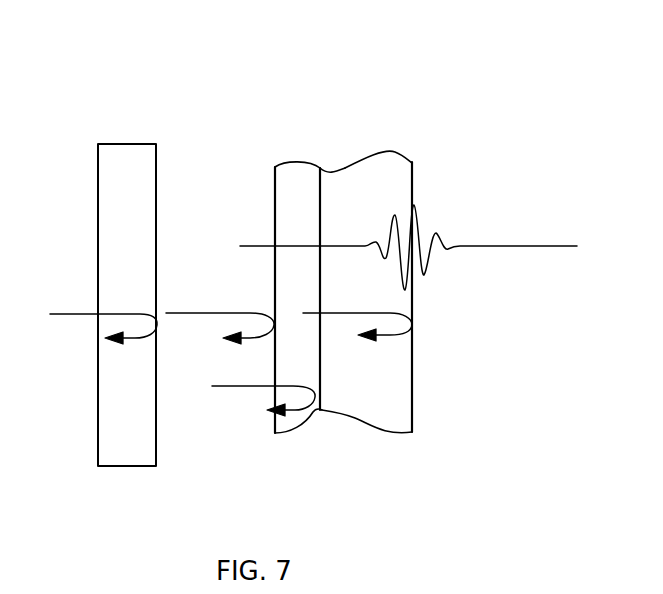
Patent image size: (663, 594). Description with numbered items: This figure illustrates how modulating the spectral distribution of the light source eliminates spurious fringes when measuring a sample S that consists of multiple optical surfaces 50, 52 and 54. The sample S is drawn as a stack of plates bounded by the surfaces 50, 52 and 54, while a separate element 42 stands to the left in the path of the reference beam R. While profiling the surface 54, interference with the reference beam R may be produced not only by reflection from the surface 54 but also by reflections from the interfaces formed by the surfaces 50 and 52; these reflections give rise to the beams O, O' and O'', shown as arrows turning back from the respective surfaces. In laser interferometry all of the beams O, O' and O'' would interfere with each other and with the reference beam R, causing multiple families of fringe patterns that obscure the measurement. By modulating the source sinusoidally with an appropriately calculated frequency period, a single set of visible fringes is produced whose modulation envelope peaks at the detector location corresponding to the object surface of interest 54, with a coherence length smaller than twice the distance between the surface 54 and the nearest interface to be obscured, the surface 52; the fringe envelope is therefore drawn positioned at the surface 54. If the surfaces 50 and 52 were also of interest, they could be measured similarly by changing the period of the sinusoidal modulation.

The reference reflector 42 is at (118, 139).
The optical surface 50 is at (275, 180).
The optical surface 52 is at (332, 172).
The optical surface 54 is at (413, 168).
The sample S is at (428, 78).
The reference beam R is at (142, 337).
The beam O is at (387, 351).
The beam O' is at (285, 434).
The beam O'' is at (220, 391).